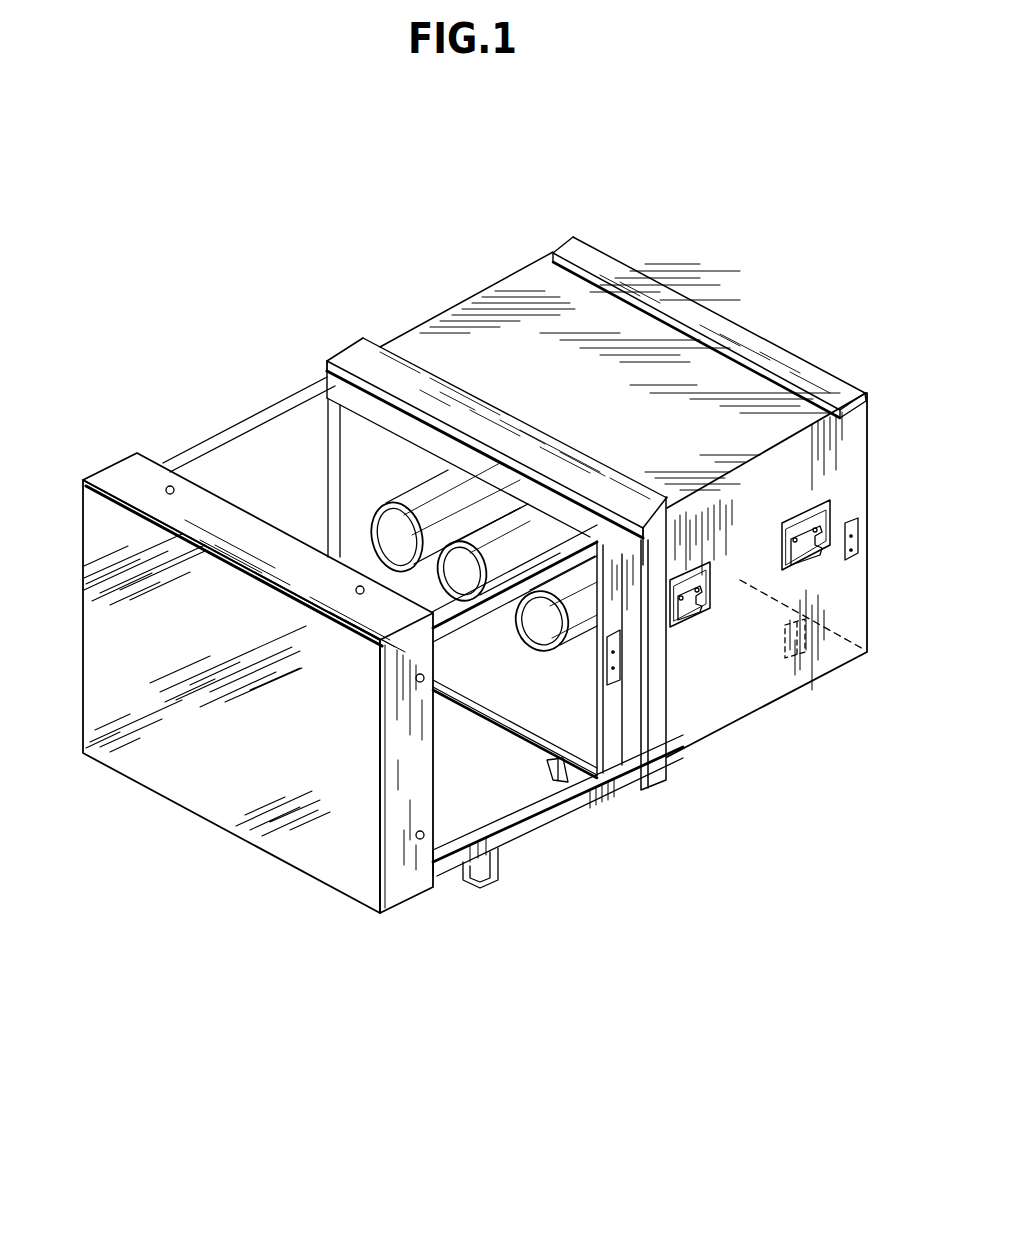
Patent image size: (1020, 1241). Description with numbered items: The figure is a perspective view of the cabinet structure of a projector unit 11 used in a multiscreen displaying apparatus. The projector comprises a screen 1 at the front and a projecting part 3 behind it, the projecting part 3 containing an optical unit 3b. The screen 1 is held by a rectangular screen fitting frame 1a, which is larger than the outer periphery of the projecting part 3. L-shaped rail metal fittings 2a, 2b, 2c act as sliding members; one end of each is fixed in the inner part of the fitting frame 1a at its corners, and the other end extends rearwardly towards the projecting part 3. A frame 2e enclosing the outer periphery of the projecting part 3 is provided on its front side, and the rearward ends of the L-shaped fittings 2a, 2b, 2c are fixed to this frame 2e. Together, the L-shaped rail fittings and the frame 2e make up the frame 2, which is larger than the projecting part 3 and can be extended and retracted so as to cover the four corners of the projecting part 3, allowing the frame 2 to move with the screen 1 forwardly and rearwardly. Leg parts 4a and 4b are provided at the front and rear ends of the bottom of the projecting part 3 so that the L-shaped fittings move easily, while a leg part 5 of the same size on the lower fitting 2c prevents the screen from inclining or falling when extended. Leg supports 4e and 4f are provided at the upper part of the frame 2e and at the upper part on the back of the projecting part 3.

The screen 1 is at (292, 855).
The screen fitting frame 1a is at (412, 878).
The frame 2 is at (226, 398).
The L-shaped rail metal fitting 2a is at (247, 428).
The L-shaped rail metal fitting 2b is at (497, 606).
The L-shaped rail metal fitting 2c is at (543, 818).
The frame 2e is at (600, 466).
The projecting part 3 is at (530, 287).
The optical unit 3b is at (390, 530).
The leg part 4a is at (545, 771).
The leg part 4b is at (790, 648).
The leg support 4e is at (355, 370).
The leg support 4f is at (718, 327).
The leg part 5 is at (489, 882).
The rear projection unit 11 is at (94, 456).